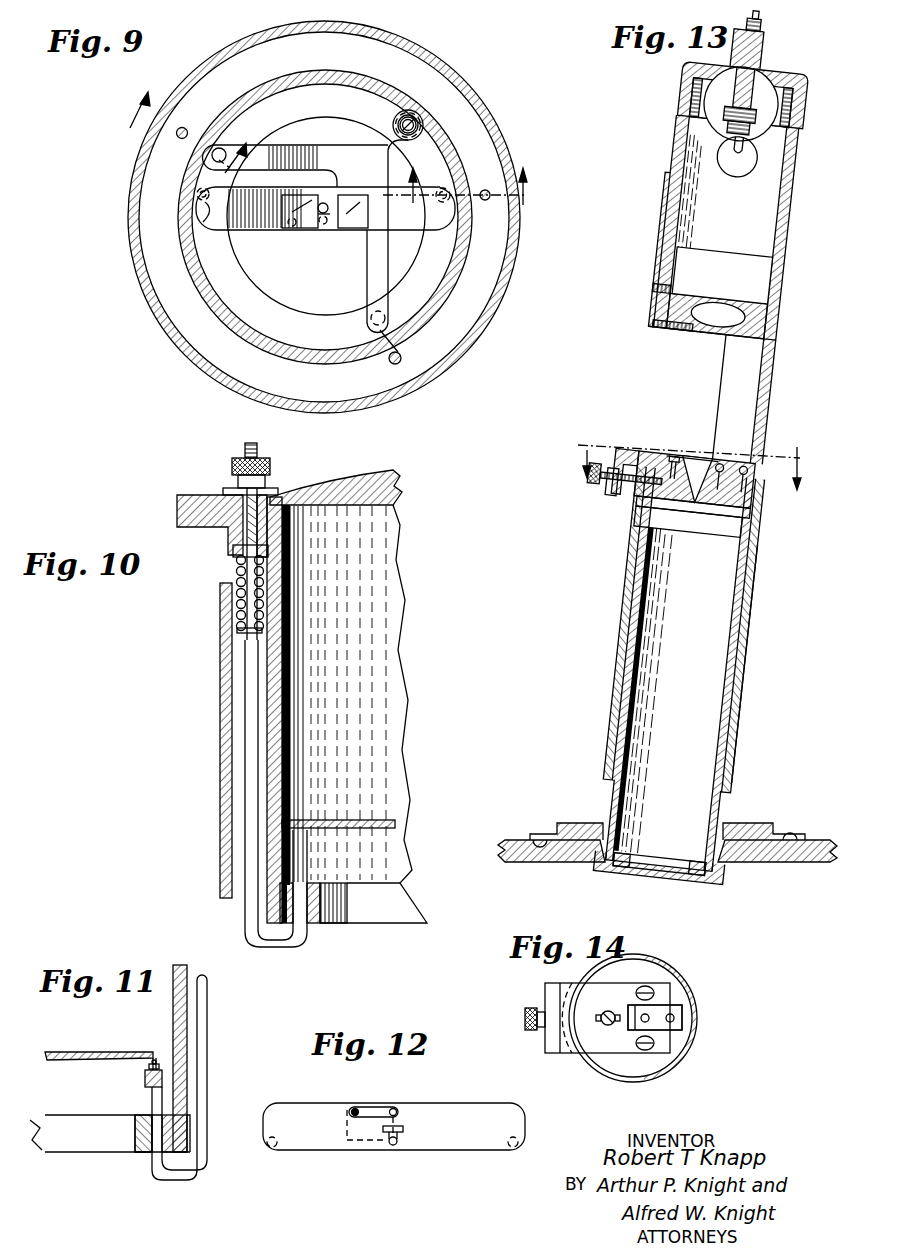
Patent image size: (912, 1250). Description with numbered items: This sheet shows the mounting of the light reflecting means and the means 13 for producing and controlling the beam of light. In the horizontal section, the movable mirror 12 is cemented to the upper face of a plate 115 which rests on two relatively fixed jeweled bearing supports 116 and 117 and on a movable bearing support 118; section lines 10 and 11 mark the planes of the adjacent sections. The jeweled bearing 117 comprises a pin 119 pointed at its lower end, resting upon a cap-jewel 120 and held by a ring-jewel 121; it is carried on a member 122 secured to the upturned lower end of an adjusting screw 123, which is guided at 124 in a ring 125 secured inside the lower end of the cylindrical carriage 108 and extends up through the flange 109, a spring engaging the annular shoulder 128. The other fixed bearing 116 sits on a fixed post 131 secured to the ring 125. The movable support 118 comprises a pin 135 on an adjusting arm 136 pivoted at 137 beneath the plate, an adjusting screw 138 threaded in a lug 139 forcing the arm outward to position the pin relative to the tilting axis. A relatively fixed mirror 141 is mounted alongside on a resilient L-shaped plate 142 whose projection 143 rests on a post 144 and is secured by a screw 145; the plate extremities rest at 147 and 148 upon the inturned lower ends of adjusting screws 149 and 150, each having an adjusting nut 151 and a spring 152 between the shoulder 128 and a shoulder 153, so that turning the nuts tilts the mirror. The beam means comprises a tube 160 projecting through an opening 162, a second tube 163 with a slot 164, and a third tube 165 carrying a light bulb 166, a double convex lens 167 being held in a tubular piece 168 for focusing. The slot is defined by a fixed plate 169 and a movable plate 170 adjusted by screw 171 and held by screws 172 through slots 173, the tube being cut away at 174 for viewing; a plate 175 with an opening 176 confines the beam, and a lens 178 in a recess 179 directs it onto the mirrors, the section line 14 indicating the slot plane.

In FIG. 9, the section line 10- 10 is at (188, 132).
In FIG. 9, the section line 11- 11 is at (469, 186).
In FIG. 9, the movable mirror 12 is at (310, 226).
In FIG. 13, the light beam producing means 13 is at (660, 220).
In FIG. 13, the section line 14- 14 is at (689, 459).
In FIG. 10, the cylindrical carriage 108 is at (273, 727).
In FIG. 10, the flange 109 is at (213, 507).
In FIG. 9, the plate 115 is at (264, 232).
In FIG. 11, the plate 115 is at (107, 1055).
In FIG. 12, the plate 115 is at (455, 1125).
In FIG. 9, the fixed bearing support 116 is at (200, 197).
In FIG. 12, the fixed bearing support 116 is at (271, 1148).
In FIG. 9, the fixed bearing support 117 is at (447, 190).
In FIG. 11, the fixed bearing support 117 is at (143, 1064).
In FIG. 12, the fixed bearing support 117 is at (513, 1148).
In FIG. 9, the movable bearing support 118 is at (326, 230).
In FIG. 12, the movable bearing support 118 is at (398, 1100).
In FIG. 11, the pin 119 is at (160, 1066).
In FIG. 11, the cap-jewel 120 is at (165, 1075).
In FIG. 11, the ring-jewel 121 is at (162, 1068).
In FIG. 11, the member 122 is at (146, 1082).
In FIG. 11, the adjusting screw 123 is at (202, 1120).
In FIG. 11, the guide 124 is at (144, 1148).
In FIG. 10, the ring 125 is at (312, 913).
In FIG. 11, the ring 125 is at (142, 1135).
In FIG. 10, the annular shoulder 128 is at (233, 548).
In FIG. 9, the fixed post 131 is at (178, 238).
In FIG. 12, the pin 135 is at (392, 1110).
In FIG. 12, the adjusting arm 136 is at (374, 1118).
In FIG. 12, the pivot 137 is at (354, 1108).
In FIG. 12, the adjusting screw 138 is at (396, 1145).
In FIG. 12, the lug 139 is at (405, 1130).
In FIG. 9, the fixed mirror 141 is at (350, 230).
In FIG. 9, the L-shaped plate 142 is at (352, 153).
In FIG. 9, the outward projection 143 is at (424, 123).
In FIG. 9, the post 144 is at (420, 112).
In FIG. 9, the screw 145 is at (423, 102).
In FIG. 9, the extremity rest 147 is at (232, 162).
In FIG. 10, the extremity rest 147 is at (310, 818).
In FIG. 9, the extremity rest 148 is at (385, 312).
In FIG. 9, the adjusting screw 149 is at (178, 133).
In FIG. 10, the adjusting screw 149 is at (250, 912).
In FIG. 9, the adjusting screw 150 is at (402, 362).
In FIG. 10, the adjusting nut 151 is at (270, 467).
In FIG. 10, the spring 152 is at (237, 572).
In FIG. 10, the shoulder 153 is at (243, 633).
In FIG. 13, the tube 160 is at (740, 660).
In FIG. 13, the opening 162 is at (737, 853).
In FIG. 14, the second tube 163 is at (684, 1022).
In FIG. 13, the second tube 163 is at (753, 567).
In FIG. 13, the slot 164 is at (707, 467).
In FIG. 13, the third tube 165 is at (777, 185).
In FIG. 13, the electric light bulb 166 is at (725, 158).
In FIG. 13, the double convex lens 167 is at (720, 330).
In FIG. 13, the tubular piece 168 is at (667, 297).
In FIG. 14, the fixed plate 169 is at (672, 1027).
In FIG. 13, the fixed plate 169 is at (740, 470).
In FIG. 13, the movable plate 170 is at (640, 465).
In FIG. 14, the adjusting screw 171 is at (530, 1007).
In FIG. 13, the adjusting screw 171 is at (600, 497).
In FIG. 14, the screws 172 is at (605, 1014).
In FIG. 13, the screws 172 is at (673, 460).
In FIG. 14, the slots 173 is at (662, 995).
In FIG. 13, the slots 173 is at (687, 467).
In FIG. 13, the cut-away 174 is at (724, 348).
In FIG. 13, the plate 175 is at (645, 886).
In FIG. 13, the opening 176 is at (660, 883).
In FIG. 10, the lens 178 is at (367, 488).
In FIG. 10, the recess 179 is at (272, 500).